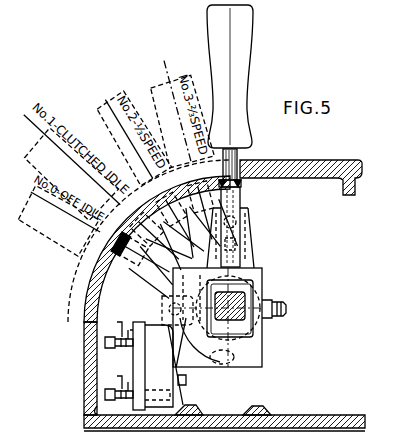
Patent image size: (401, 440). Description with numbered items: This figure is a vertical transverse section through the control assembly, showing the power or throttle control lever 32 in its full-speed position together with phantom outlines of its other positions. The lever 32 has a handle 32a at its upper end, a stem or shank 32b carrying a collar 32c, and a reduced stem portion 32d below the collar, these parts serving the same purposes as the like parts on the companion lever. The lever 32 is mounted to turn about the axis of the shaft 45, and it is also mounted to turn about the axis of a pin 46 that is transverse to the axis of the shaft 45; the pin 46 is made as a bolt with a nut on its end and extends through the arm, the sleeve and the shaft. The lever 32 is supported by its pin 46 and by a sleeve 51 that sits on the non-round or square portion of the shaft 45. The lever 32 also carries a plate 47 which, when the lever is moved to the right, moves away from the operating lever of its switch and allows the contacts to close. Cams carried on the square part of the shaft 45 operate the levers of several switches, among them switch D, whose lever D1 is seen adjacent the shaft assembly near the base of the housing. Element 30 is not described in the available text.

The top plate 30 is at (330, 160).
The power or throttle control lever 32 is at (242, 203).
The handle 32a is at (253, 62).
The stem or shank 32b is at (237, 160).
The collar 32c is at (241, 184).
The reduced stem portion 32d is at (238, 232).
The shaft 45 is at (238, 302).
The pin 46 is at (287, 308).
The plate 47 is at (262, 364).
The sleeve 51 is at (243, 288).
The switch D is at (182, 403).
The lever of switch D D1 is at (174, 350).